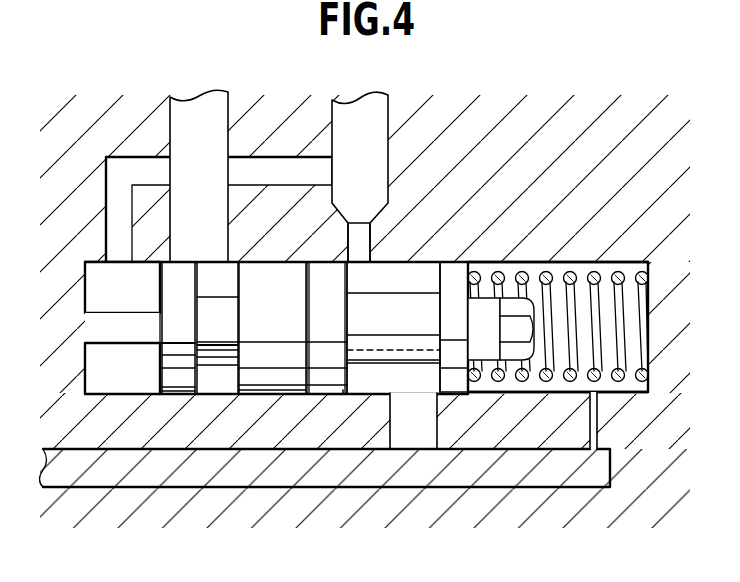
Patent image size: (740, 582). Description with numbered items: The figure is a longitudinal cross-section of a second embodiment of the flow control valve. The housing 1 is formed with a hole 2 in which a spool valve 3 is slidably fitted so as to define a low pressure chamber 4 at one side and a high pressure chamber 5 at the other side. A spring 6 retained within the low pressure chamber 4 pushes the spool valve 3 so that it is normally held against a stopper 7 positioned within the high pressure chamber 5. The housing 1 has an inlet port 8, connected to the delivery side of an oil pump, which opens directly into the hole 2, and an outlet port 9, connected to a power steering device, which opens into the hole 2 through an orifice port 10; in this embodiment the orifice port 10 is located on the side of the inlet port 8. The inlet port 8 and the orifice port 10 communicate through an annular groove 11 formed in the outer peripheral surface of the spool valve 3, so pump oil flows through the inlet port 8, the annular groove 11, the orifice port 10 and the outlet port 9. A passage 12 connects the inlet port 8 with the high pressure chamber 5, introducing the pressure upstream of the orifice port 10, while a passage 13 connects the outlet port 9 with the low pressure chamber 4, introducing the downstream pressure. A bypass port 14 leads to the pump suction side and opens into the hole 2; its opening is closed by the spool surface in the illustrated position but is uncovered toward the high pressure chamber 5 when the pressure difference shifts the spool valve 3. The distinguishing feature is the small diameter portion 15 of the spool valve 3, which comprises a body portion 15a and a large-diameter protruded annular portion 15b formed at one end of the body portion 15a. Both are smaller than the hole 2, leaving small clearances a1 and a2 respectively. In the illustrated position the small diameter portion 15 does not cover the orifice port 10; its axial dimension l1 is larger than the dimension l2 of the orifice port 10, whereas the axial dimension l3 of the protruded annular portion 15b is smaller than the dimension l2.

The housing 1 is at (474, 498).
The hole 2 is at (613, 262).
The spool valve 3 is at (158, 358).
The low pressure chamber 4 is at (610, 318).
The high pressure chamber 5 is at (102, 277).
The spring 6 is at (632, 360).
The stopper 7 is at (124, 343).
The inlet port 8 is at (370, 136).
The outlet port 9 is at (153, 470).
The orifice port 10 is at (371, 227).
The annular groove 11 is at (408, 366).
The passage 12 is at (112, 193).
The passage 13 is at (592, 428).
The bypass port 14 is at (212, 136).
The small diameter portion 15 is at (317, 396).
The body portion 15a is at (328, 395).
The large-diameter protruded annular portion 15b is at (345, 392).
The small clearance a1 is at (343, 258).
The small clearance a2 is at (313, 283).
The axial dimension of small diameter portion l1 is at (278, 313).
The dimension of orifice port l2 is at (330, 234).
The axial dimension of protruded annular portion l3 is at (318, 347).